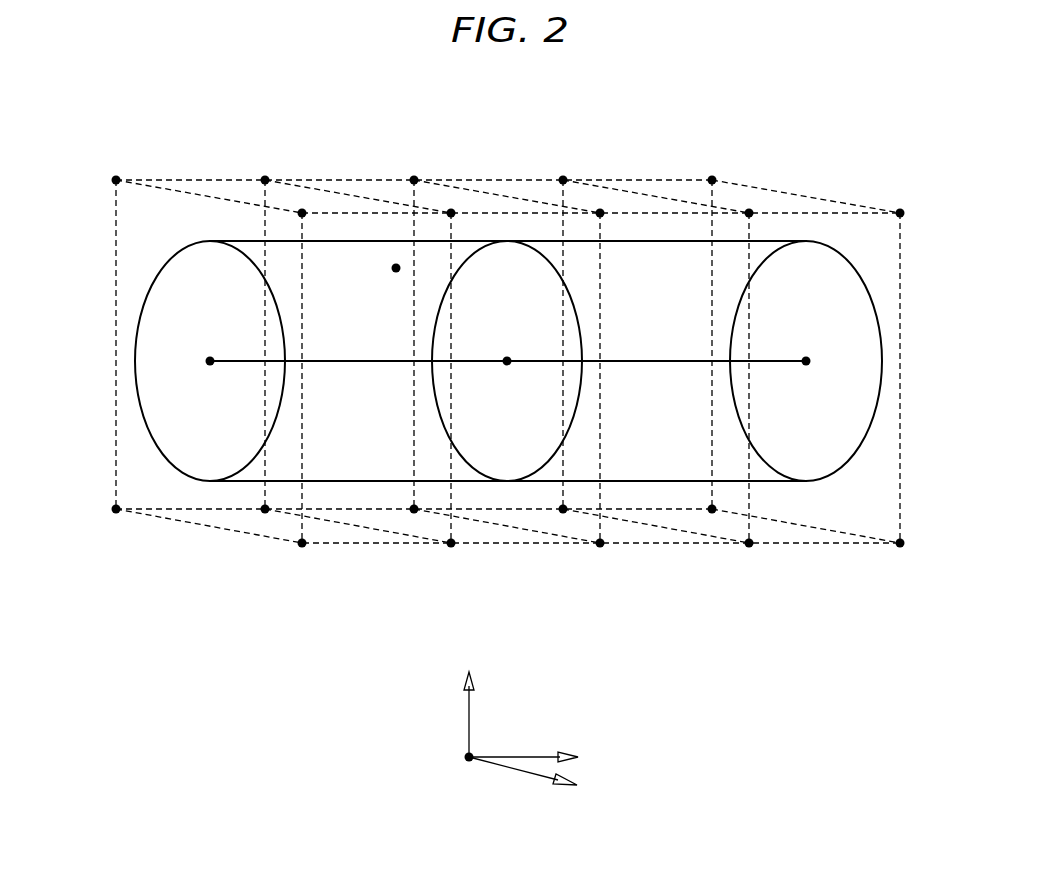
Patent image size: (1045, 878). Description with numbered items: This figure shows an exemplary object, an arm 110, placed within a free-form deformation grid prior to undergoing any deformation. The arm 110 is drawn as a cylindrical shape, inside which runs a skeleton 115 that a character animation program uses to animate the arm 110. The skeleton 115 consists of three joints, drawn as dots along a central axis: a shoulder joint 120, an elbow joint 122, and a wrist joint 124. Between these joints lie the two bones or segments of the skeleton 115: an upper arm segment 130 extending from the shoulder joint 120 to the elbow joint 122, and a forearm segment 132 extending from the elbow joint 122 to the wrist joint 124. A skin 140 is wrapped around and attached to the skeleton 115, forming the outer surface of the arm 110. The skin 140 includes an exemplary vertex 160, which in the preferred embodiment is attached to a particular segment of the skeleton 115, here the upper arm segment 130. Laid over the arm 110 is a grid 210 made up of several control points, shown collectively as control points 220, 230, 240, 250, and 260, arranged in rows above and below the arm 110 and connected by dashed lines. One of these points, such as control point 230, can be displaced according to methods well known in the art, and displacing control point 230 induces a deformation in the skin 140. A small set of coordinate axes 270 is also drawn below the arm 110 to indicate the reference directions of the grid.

The arm 110 is at (126, 349).
The skeleton 115 is at (622, 390).
The shoulder joint 120 is at (208, 365).
The elbow joint 122 is at (505, 365).
The wrist joint 124 is at (804, 365).
The upper arm segment 130 is at (337, 359).
The forearm segment 132 is at (652, 359).
The skin 140 is at (340, 483).
The vertex 160 is at (397, 272).
The grid 210 is at (208, 178).
The control points 220 is at (116, 176).
The control point 230 is at (265, 176).
The control points 240 is at (414, 176).
The control points 250 is at (563, 176).
The control points 260 is at (712, 176).
The coordinate system 270 is at (545, 698).